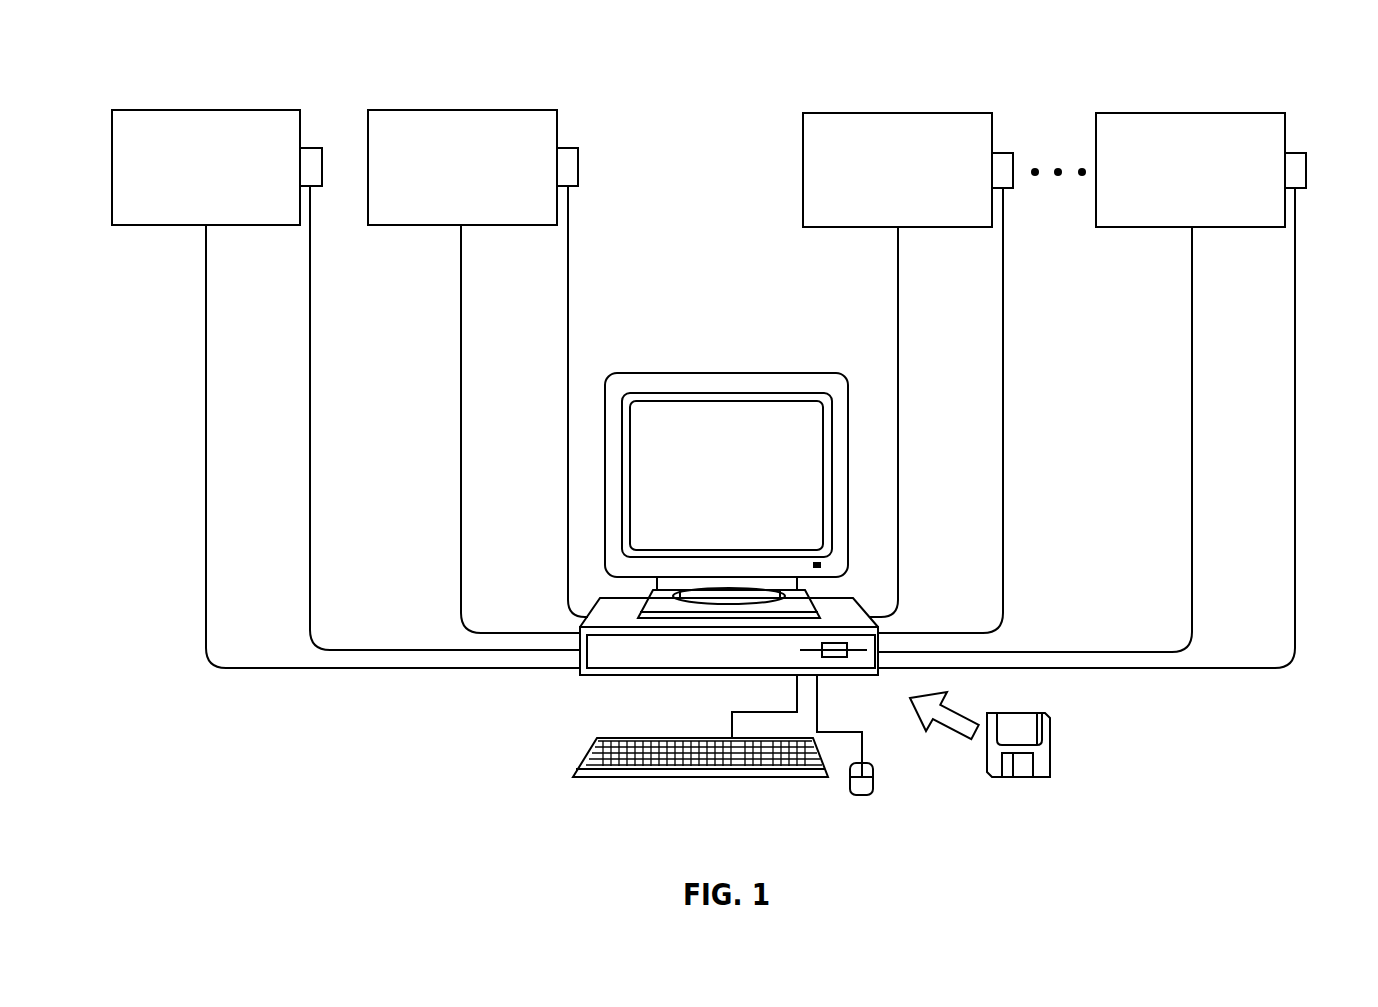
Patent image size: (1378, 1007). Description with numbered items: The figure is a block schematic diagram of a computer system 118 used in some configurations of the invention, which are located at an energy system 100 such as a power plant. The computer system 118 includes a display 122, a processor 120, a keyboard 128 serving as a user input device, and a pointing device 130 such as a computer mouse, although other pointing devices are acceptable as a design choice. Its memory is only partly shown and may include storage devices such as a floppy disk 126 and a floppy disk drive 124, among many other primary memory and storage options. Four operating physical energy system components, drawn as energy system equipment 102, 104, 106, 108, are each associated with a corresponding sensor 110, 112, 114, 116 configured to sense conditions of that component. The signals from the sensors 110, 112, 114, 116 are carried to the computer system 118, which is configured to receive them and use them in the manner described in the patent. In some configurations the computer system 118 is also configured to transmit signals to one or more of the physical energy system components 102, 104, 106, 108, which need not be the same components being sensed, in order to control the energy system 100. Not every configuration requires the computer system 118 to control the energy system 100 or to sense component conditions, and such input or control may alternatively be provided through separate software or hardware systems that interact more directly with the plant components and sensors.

The energy system 100 is at (166, 45).
The energy system component 102 is at (188, 109).
The energy system component 104 is at (440, 109).
The energy system component 106 is at (880, 112).
The energy system component 108 is at (1172, 112).
The sensor 110 is at (310, 148).
The sensor 112 is at (567, 148).
The sensor 114 is at (1002, 153).
The sensor 116 is at (1296, 153).
The computer system 118 is at (438, 712).
The processor 120 is at (632, 662).
The display 122 is at (713, 417).
The floppy disk drive 124 is at (847, 657).
The floppy disk 126 is at (1050, 745).
The keyboard 128 is at (700, 778).
The pointing device 130 is at (862, 797).